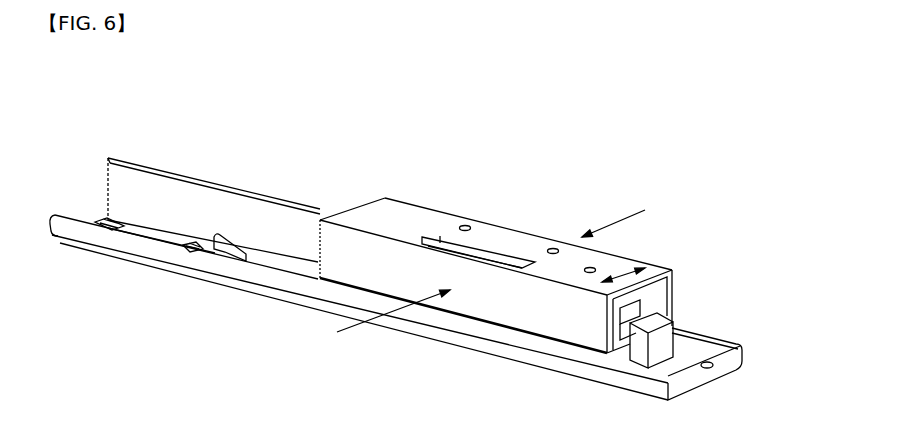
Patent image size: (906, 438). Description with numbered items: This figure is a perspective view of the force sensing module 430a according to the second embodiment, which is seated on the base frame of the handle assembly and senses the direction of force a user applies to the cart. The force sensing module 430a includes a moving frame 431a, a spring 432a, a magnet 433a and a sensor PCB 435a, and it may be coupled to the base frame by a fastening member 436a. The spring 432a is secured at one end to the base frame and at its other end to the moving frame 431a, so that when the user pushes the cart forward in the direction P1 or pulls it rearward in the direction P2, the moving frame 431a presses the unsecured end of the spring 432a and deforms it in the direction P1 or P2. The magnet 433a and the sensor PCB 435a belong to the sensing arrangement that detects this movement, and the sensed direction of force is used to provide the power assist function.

The force sensing module 430a is at (706, 103).
The moving frame 431a is at (400, 213).
The spring 432a is at (173, 184).
The magnet 433a is at (626, 317).
The sensor PCB 435a is at (677, 350).
The fastening member 436a is at (190, 248).
The direction of force (front) P1 is at (378, 319).
The direction of force (rear) P2 is at (628, 216).